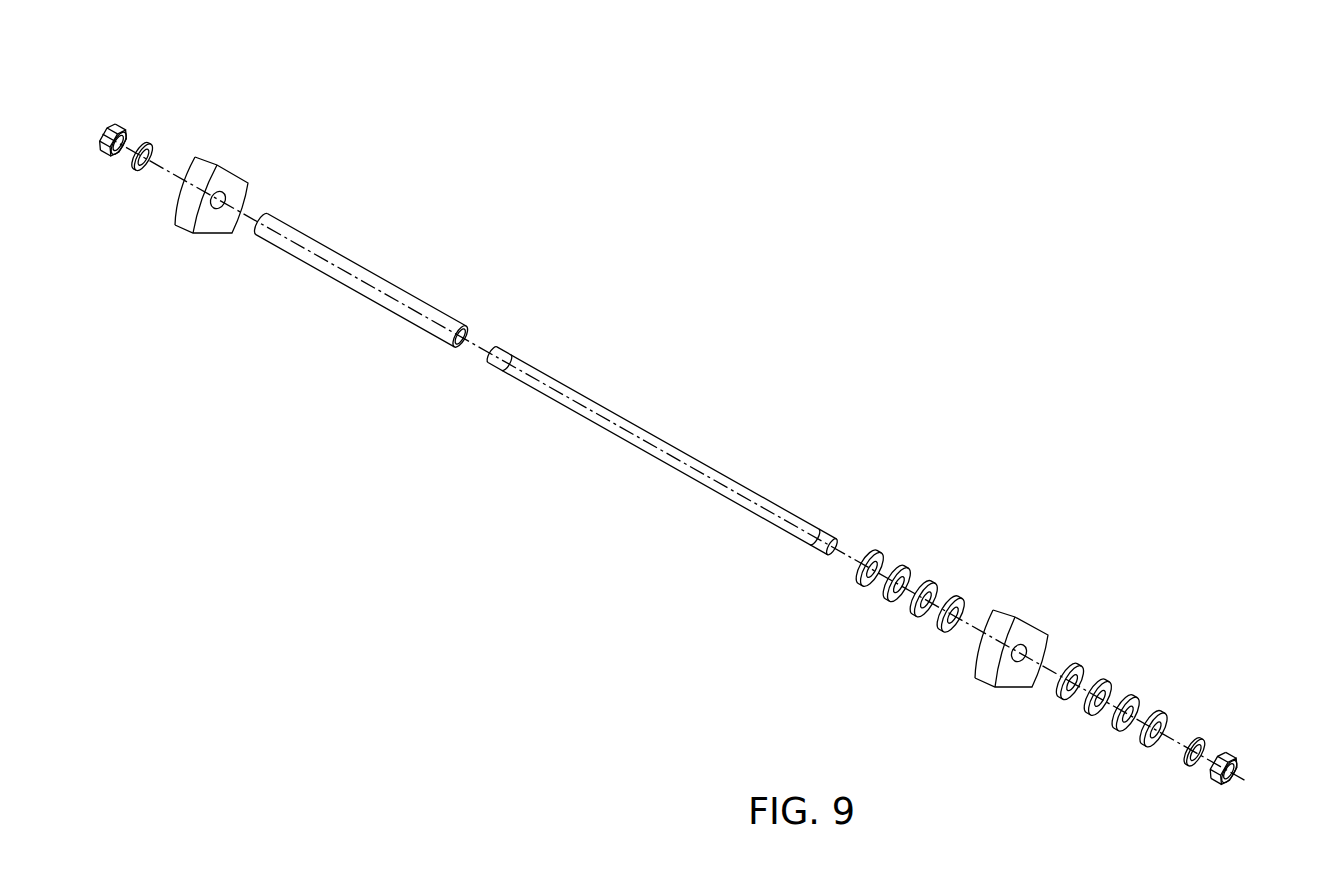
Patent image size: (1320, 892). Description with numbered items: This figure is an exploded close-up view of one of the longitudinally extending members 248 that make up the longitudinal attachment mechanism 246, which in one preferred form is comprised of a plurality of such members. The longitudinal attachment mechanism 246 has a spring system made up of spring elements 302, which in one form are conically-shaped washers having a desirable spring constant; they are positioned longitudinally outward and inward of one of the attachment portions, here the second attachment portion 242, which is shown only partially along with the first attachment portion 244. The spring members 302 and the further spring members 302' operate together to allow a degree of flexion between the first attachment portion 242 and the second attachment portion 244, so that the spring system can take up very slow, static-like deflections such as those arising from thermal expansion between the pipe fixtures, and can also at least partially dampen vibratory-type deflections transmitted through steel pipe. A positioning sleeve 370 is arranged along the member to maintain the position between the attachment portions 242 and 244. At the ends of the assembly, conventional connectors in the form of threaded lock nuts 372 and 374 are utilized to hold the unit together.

The threaded lock nut 372 is at (110, 130).
The first attachment portion 244 is at (197, 168).
The positioning sleeve 370 is at (425, 308).
The longitudinally extending member 248 is at (788, 531).
The longitudinal attachment mechanism 246 is at (895, 455).
The spring elements 302 is at (956, 558).
The second attachment portion 242 is at (1003, 618).
The spring members 302' is at (1135, 674).
The threaded lock nut 374 is at (1237, 754).